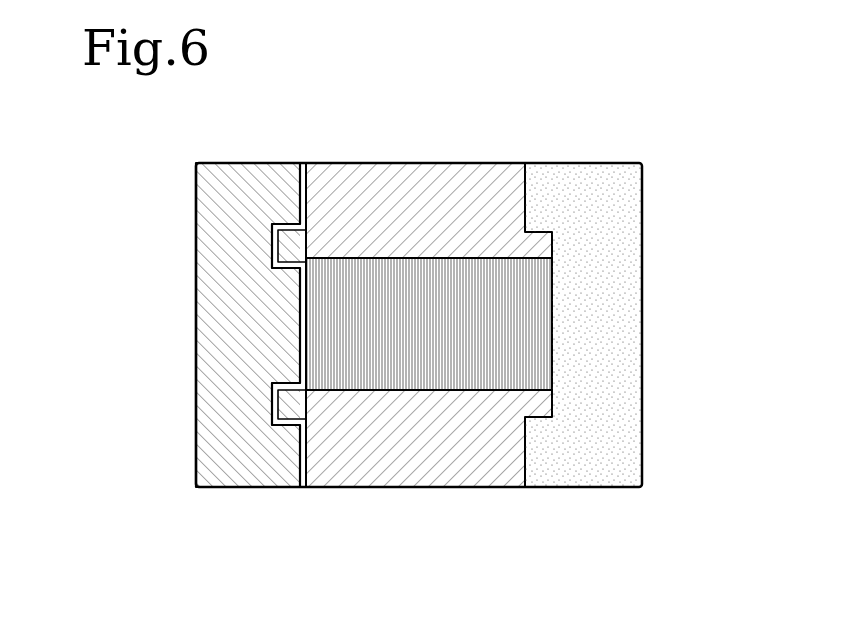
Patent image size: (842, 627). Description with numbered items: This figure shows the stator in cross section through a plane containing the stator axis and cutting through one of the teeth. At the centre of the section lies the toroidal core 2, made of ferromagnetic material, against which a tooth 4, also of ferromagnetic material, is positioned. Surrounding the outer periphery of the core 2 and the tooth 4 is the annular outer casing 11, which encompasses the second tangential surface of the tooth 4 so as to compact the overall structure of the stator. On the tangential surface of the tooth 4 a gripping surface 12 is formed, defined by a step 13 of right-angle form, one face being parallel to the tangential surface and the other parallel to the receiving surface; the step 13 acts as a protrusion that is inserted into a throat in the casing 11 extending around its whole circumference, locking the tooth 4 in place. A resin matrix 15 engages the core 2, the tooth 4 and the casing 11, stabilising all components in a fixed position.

The toroidal core 2 is at (507, 310).
The tooth 4 is at (428, 203).
The outer casing 11 is at (233, 318).
The gripping surface 12 is at (277, 247).
The step 13 is at (288, 243).
The resin matrix 15 is at (303, 290).